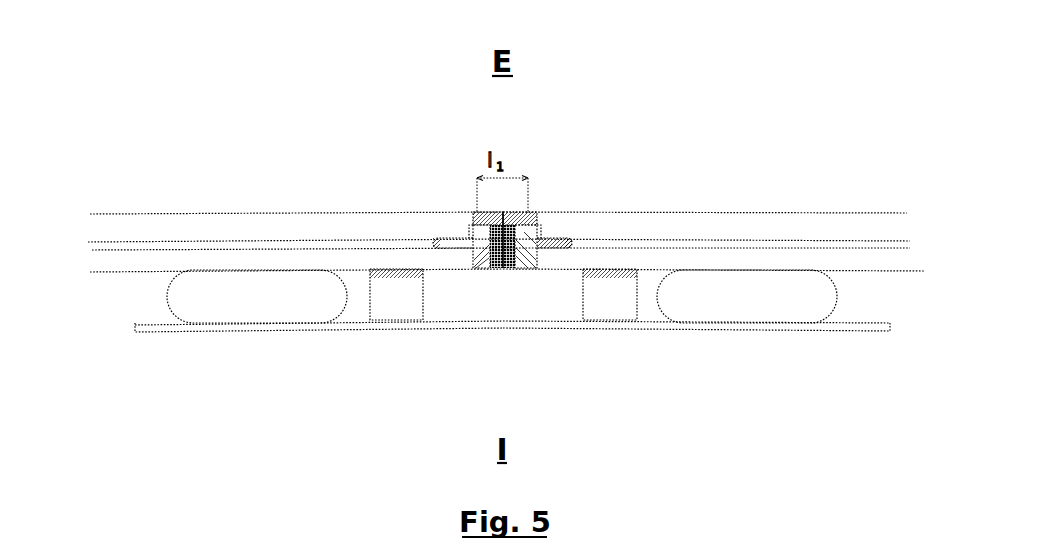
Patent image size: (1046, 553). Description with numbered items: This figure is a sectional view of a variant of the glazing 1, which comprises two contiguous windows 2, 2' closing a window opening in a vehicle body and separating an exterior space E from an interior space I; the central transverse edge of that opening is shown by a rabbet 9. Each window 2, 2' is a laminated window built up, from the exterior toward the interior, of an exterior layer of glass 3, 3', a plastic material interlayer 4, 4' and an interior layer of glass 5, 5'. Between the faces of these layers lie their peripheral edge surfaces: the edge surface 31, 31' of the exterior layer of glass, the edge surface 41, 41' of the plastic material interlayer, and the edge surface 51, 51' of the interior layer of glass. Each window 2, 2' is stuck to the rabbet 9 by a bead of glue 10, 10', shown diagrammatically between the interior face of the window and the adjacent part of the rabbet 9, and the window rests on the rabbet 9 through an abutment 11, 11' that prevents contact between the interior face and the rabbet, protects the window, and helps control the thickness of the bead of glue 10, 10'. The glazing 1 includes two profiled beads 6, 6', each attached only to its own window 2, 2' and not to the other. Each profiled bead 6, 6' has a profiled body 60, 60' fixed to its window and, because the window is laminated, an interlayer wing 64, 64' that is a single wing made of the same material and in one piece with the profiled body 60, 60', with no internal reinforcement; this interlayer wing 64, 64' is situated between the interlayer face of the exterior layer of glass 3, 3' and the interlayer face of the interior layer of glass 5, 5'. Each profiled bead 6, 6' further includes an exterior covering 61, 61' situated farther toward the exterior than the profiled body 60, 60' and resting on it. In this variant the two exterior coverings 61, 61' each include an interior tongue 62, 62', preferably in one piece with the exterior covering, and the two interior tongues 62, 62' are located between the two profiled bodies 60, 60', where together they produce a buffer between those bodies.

The glazing 1 is at (440, 72).
The window 2 is at (731, 98).
The window 2' is at (292, 100).
The exterior layer of glass 3 is at (732, 210).
The exterior layer of glass 3' is at (282, 203).
The plastic material interlayer 4 is at (728, 258).
The plastic material interlayer 4' is at (277, 233).
The interior layer of glass 5 is at (723, 293).
The interior layer of glass 5' is at (273, 295).
The profiled bead 6 is at (544, 399).
The profiled bead 6' is at (408, 115).
The rabbet 9 is at (698, 323).
The bead of glue 10 is at (747, 319).
The bead of glue 10' is at (257, 322).
The abutment 11 is at (632, 326).
The abutment 11' is at (375, 341).
The edge surface of exterior layer of glass 31 is at (588, 190).
The edge surface of exterior layer of glass 31' is at (435, 209).
The edge surface of plastic material interlayer 41 is at (606, 216).
The edge surface of plastic material interlayer 41' is at (405, 273).
The edge surface of interior layer of glass 51 is at (544, 273).
The edge surface of interior layer of glass 51' is at (458, 276).
The profiled body 60 is at (542, 296).
The profiled body 60' is at (467, 307).
The exterior covering 61 is at (547, 178).
The exterior covering 61' is at (474, 183).
The interior tongue 62 is at (521, 286).
The interior tongue 62' is at (491, 291).
The interlayer wing 64 is at (596, 211).
The interlayer wing 64' is at (393, 213).